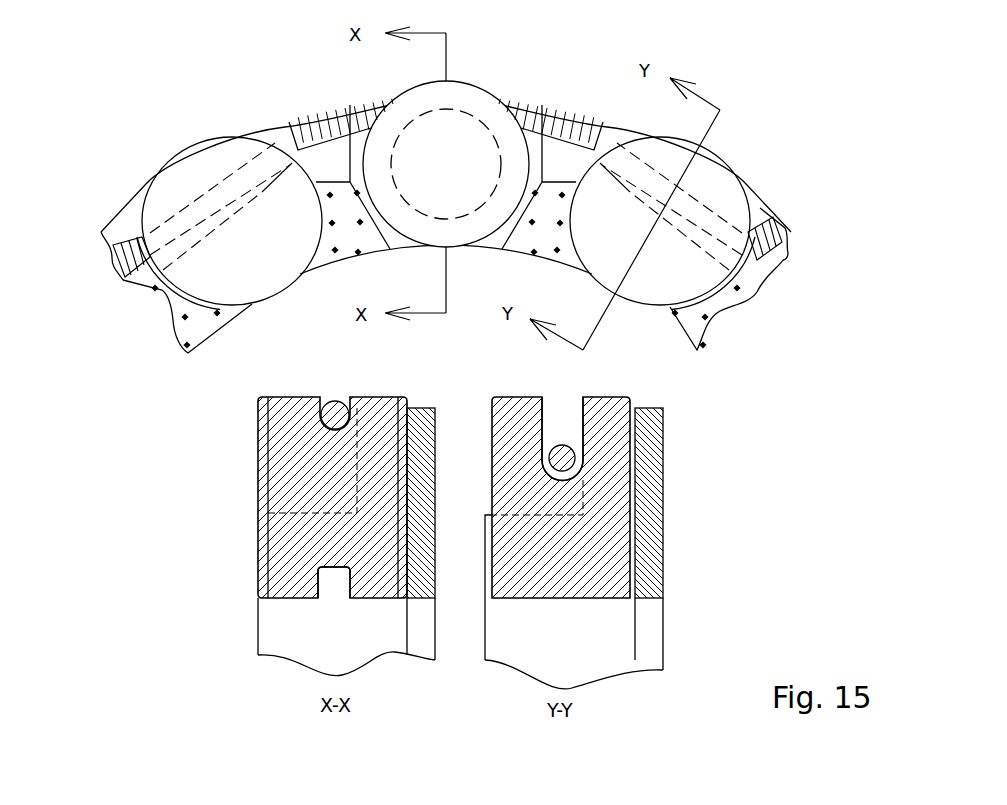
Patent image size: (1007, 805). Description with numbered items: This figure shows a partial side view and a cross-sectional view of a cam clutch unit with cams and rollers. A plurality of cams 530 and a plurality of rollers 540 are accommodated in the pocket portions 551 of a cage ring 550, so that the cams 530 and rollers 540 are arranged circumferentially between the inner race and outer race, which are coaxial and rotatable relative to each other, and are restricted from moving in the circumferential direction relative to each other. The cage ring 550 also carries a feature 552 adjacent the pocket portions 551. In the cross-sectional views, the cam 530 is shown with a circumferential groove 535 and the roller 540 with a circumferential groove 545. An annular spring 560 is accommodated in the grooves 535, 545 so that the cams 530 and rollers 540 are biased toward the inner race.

The cam 530 is at (213, 160).
The circumferential groove 535 is at (580, 388).
The roller 540 is at (427, 107).
The circumferential groove 545 is at (347, 606).
The cage ring 550 is at (577, 105).
The pocket portion 551 is at (141, 184).
The tab 552 is at (528, 81).
The annular spring 560 is at (336, 119).